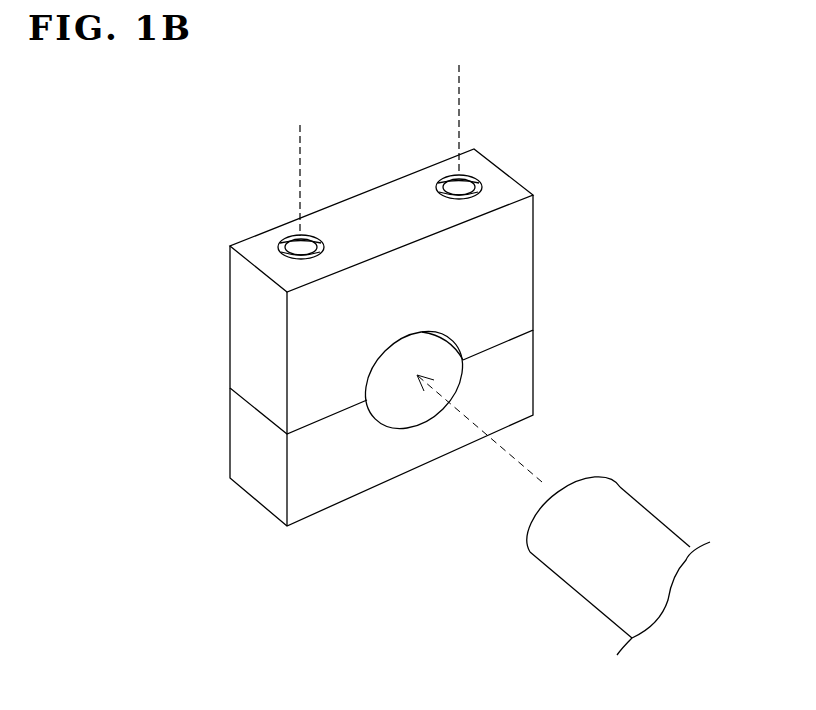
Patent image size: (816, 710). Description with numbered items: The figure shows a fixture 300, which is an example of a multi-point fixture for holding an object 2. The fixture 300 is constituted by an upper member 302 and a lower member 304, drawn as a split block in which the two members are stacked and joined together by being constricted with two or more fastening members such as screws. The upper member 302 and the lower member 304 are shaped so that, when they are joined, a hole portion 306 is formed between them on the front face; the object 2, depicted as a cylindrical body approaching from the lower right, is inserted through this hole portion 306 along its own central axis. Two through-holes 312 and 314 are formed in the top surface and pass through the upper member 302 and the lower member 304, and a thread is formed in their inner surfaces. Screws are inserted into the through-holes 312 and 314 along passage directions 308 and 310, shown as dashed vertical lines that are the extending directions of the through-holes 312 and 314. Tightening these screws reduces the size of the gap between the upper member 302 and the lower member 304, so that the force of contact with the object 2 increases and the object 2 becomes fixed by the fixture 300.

The object 2 is at (633, 520).
The fixture 300 is at (503, 116).
The upper member 302 is at (515, 282).
The lower member 304 is at (515, 380).
The hole portion 306 is at (398, 396).
The passage direction 308 is at (300, 158).
The passage direction 310 is at (459, 103).
The through-hole 312 is at (288, 240).
The through-hole 314 is at (470, 178).